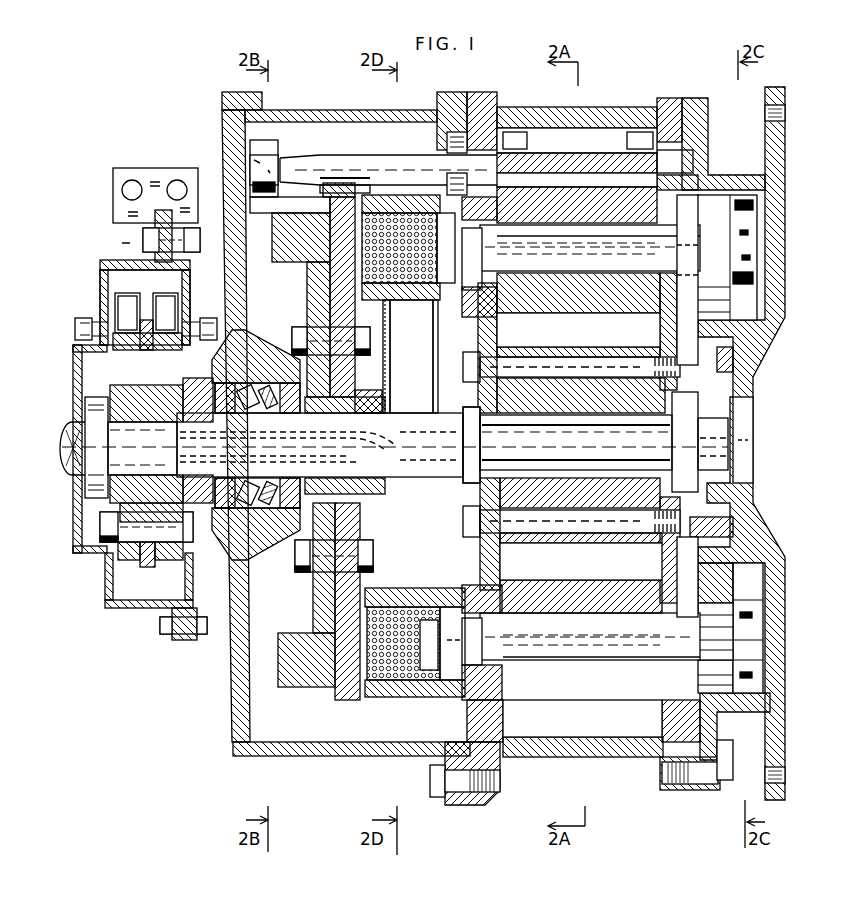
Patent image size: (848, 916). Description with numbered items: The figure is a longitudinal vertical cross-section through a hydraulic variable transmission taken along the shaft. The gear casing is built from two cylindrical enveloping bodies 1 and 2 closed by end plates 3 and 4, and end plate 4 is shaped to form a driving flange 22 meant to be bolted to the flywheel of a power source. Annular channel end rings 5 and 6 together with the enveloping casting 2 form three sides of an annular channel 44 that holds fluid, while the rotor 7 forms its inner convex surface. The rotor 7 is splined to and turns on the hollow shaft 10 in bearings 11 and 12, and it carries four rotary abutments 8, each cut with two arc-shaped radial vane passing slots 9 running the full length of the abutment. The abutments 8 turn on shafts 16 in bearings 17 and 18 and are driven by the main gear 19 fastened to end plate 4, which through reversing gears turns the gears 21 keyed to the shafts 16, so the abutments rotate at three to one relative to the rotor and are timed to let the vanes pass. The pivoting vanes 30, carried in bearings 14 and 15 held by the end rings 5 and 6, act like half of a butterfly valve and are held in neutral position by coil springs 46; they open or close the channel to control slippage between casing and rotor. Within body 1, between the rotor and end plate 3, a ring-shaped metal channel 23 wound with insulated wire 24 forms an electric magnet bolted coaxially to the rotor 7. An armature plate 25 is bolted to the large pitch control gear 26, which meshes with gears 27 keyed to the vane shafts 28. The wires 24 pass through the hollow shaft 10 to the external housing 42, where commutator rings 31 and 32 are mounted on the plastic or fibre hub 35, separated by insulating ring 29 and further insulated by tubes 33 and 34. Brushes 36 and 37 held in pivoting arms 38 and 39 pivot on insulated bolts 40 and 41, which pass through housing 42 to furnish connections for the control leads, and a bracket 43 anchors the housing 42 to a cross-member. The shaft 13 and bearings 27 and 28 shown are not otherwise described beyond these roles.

The cylindrical enveloping body 1 is at (352, 118).
The cylindrical enveloping body 2 is at (588, 112).
The end plate 3 is at (223, 108).
The end plate 4 is at (703, 108).
The annular channel end ring 5 is at (470, 90).
The annular channel end ring 6 is at (674, 106).
The rotor 7 is at (482, 394).
The rotary abutment 8 is at (598, 310).
The radial vane passing slot 9 is at (534, 348).
The shaft 10 is at (394, 442).
The bearing 11 is at (278, 410).
The bearing 12 is at (742, 414).
The auxiliary shaft 13 is at (388, 158).
The bearing 14 is at (497, 150).
The bearing 15 is at (660, 152).
The abutment shaft 16 is at (603, 260).
The bearing 17 is at (490, 276).
The bearing 18 is at (680, 268).
The main gear 19 is at (660, 340).
The gear 21 is at (730, 262).
The driving flange 22 is at (764, 103).
The annular metal channel 23 is at (378, 290).
The wire 24 is at (388, 350).
The armature plate 25 is at (368, 392).
The pitch control gear 26 is at (306, 296).
The gear 27 is at (278, 148).
The vane shaft 28 is at (434, 158).
The insulating ring 29 is at (150, 568).
The pivoting vane 30 is at (596, 158).
The commutator ring 31 is at (130, 562).
The commutator ring 32 is at (170, 562).
The insulating tube 33 is at (112, 388).
The insulating ring 34 is at (113, 548).
The hub 35 is at (161, 450).
The brush 36 is at (112, 306).
The brush 37 is at (170, 308).
The pivoting arm 38 is at (132, 302).
The pivoting arm 39 is at (172, 302).
The bolt 40 is at (90, 320).
The bolt 41 is at (200, 316).
The housing 42 is at (102, 268).
The anchoring bracket 43 is at (166, 172).
The annular channel 44 is at (582, 718).
The coil spring 46 is at (437, 119).